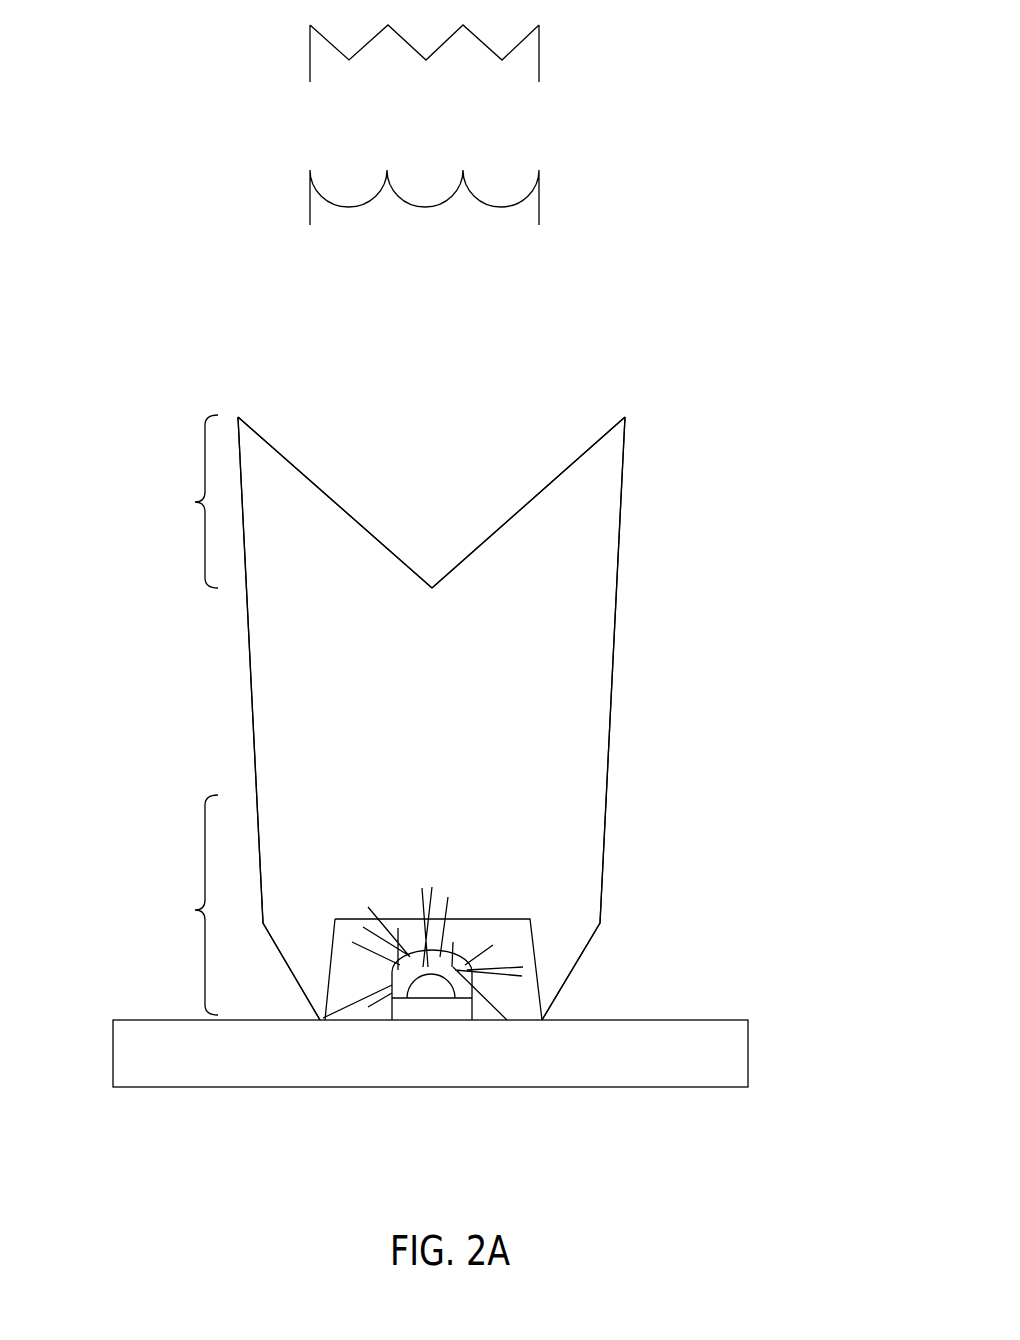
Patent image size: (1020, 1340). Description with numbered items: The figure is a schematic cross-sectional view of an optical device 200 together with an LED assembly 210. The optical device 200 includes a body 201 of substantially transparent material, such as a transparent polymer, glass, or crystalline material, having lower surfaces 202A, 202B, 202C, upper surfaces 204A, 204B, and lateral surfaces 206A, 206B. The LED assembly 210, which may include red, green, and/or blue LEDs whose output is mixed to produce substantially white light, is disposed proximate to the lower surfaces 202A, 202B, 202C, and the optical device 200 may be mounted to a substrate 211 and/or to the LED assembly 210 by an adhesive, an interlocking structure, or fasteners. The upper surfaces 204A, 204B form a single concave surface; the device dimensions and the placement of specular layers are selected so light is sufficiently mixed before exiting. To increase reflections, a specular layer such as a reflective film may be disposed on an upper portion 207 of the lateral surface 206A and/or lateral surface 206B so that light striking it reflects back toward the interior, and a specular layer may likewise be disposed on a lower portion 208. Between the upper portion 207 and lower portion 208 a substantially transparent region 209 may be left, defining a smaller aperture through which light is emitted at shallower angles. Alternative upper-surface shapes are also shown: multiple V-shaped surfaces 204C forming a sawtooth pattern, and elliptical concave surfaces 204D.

The optical device 200 is at (658, 783).
The body 201 is at (658, 455).
The lower surface 202A is at (338, 977).
The lower surface 202B is at (505, 915).
The lower surface 202C is at (533, 970).
The upper surface 204A is at (333, 497).
The upper surface 204B is at (535, 497).
The V-shaped surfaces 204C is at (539, 52).
The elliptical concave surfaces 204D is at (539, 200).
The lateral surface 206A is at (248, 628).
The lateral surface 206B is at (613, 680).
The upper portion 207 is at (195, 502).
The lower portion 208 is at (195, 910).
The substantially transparent region 209 is at (193, 727).
The LED assembly 210 is at (428, 1007).
The substrate 211 is at (645, 1053).